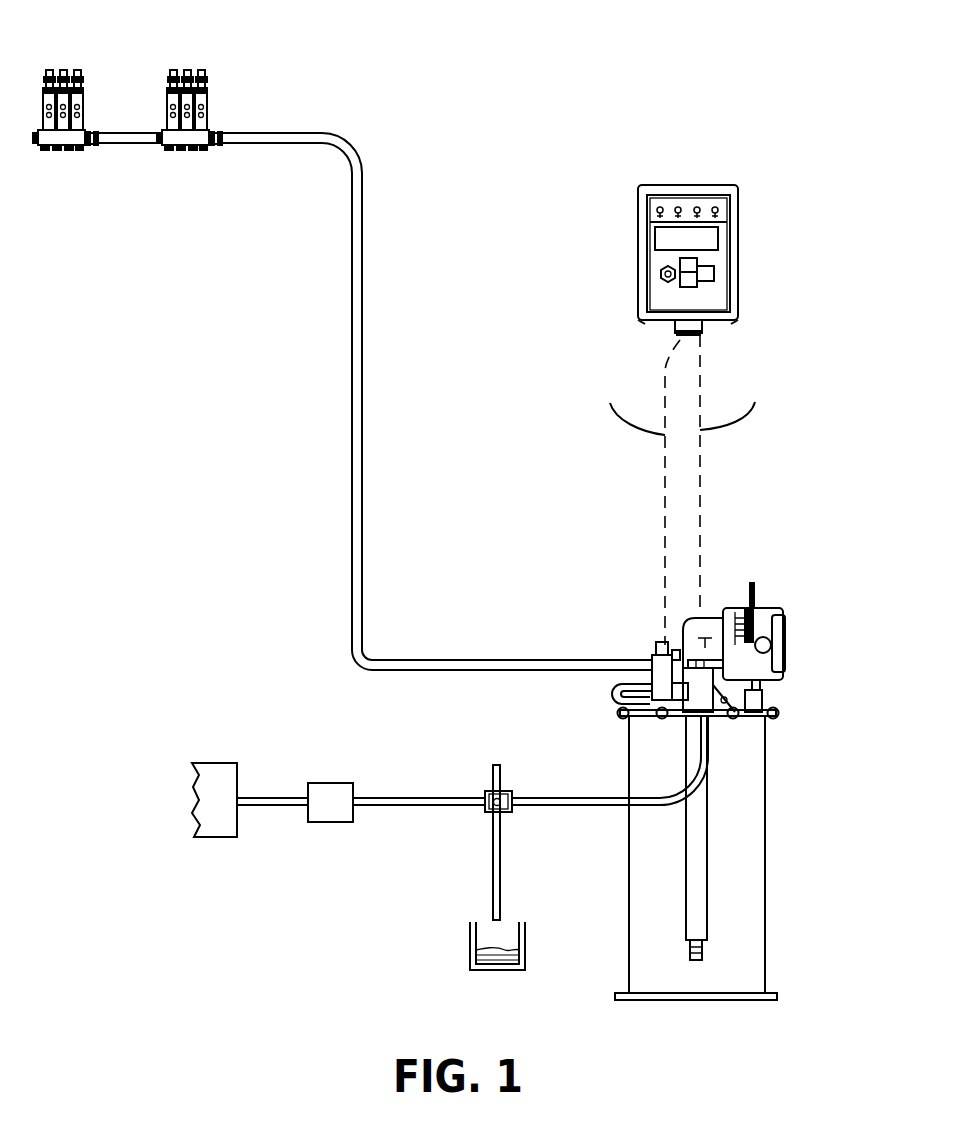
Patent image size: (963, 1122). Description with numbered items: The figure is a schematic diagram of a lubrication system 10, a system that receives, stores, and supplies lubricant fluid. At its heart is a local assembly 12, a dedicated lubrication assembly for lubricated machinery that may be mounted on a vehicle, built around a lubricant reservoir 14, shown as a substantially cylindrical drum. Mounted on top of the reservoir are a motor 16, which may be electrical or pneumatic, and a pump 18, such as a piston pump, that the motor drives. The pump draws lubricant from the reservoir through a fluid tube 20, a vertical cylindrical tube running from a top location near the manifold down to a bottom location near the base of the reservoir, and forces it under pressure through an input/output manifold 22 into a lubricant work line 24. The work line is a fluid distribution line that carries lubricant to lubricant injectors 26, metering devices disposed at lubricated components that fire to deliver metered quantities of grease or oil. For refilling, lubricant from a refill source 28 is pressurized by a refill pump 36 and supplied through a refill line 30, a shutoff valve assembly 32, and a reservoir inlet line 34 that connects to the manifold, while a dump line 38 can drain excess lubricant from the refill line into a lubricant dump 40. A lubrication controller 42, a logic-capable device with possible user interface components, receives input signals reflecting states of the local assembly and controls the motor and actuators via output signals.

The lubrication system 10 is at (430, 102).
The local assembly 12 is at (786, 730).
The lubricant reservoir 14 is at (735, 877).
The motor 16 is at (658, 642).
The pump 18 is at (683, 728).
The fluid tube 20 is at (693, 920).
The input/output manifold 22 is at (650, 660).
The lubricant work line 24 is at (352, 248).
The lubricant injectors 26 is at (85, 100).
The refill source 28 is at (218, 815).
The refill line 30 is at (567, 808).
The shutoff valve assembly 32 is at (710, 727).
The reservoir inlet line 34 is at (612, 692).
The refill pump 36 is at (325, 808).
The dump line 38 is at (493, 852).
The lubricant dump 40 is at (490, 972).
The lubrication controller 42 is at (732, 258).